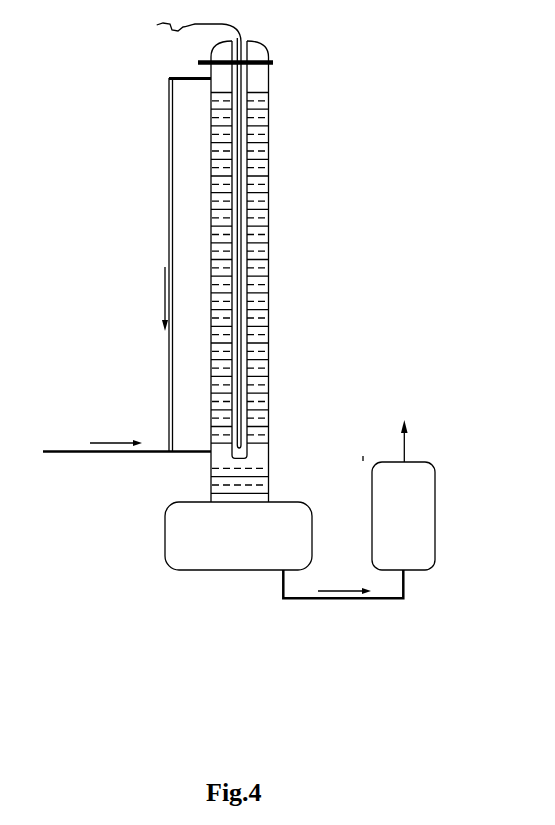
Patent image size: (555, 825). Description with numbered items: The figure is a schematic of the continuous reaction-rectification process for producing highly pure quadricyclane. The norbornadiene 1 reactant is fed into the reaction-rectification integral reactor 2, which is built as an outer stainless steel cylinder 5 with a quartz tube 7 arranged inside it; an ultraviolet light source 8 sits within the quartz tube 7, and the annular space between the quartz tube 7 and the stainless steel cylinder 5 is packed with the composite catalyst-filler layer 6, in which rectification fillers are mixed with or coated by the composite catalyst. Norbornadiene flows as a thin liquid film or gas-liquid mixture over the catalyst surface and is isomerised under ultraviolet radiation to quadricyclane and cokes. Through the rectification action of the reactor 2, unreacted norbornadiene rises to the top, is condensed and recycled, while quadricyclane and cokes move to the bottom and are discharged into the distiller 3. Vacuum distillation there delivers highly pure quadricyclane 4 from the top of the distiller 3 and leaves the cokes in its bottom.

The norbornadiene 1 is at (120, 433).
The reaction-rectification integral reactor 2 is at (284, 593).
The distiller 3 is at (391, 569).
The highly pure quadricyclane 4 is at (364, 425).
The stainless steel cylinder 5 is at (281, 271).
The composite catalyst-filler layer 6 is at (288, 293).
The quartz tube 7 is at (298, 249).
The ultraviolet light source 8 is at (261, 235).